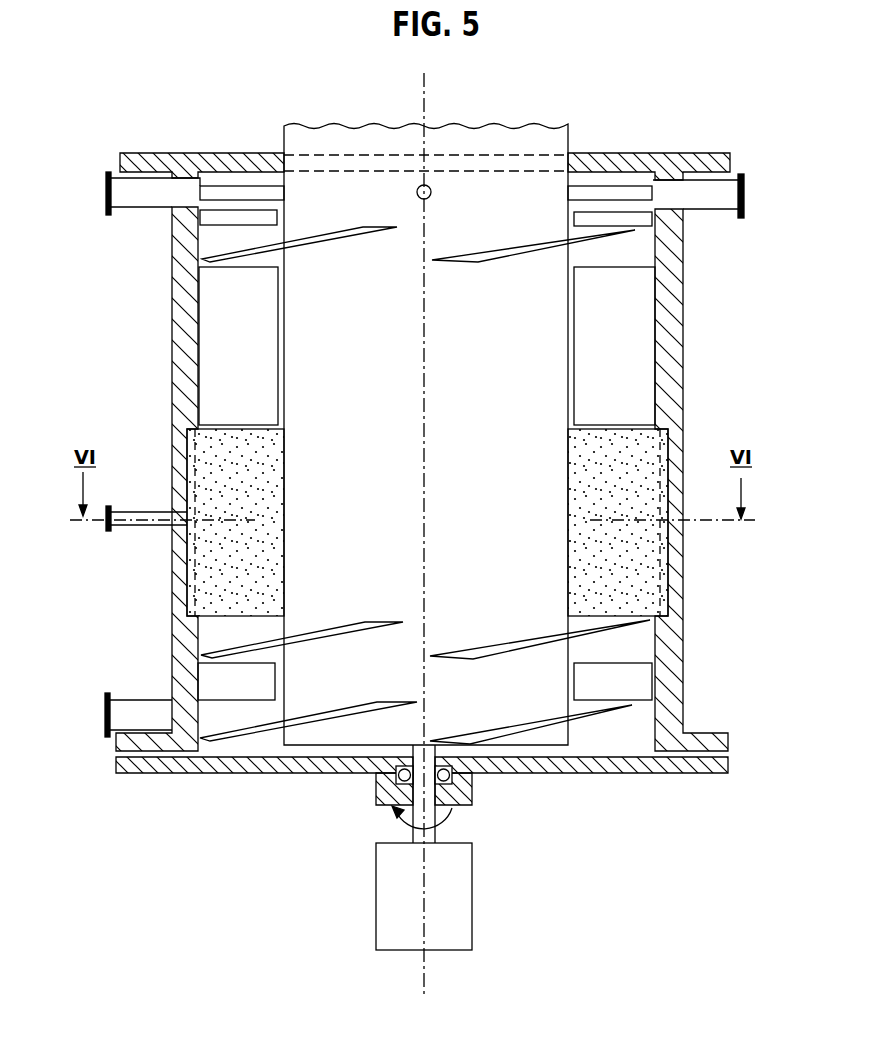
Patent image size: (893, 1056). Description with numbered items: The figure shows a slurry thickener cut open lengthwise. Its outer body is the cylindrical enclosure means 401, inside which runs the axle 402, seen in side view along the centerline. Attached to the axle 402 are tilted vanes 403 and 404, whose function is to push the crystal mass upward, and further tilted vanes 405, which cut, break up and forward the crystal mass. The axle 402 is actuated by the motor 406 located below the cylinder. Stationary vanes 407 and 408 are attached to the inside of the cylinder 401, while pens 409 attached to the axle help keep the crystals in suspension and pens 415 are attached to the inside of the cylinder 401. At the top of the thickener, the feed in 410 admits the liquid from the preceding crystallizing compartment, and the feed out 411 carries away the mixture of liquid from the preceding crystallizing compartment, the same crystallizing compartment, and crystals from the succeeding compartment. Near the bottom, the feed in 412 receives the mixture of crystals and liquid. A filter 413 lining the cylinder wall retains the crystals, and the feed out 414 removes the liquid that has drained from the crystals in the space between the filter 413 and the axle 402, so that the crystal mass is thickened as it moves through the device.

The cylindrical enclosure means 401 is at (672, 571).
The axle 402 is at (310, 311).
The tilted vanes 403 is at (535, 720).
The tilted vanes 404 is at (528, 640).
The tilted vanes 405 is at (530, 246).
The motor 406 is at (393, 891).
The stationary vanes 407 is at (222, 677).
The stationary vanes 408 is at (623, 315).
The pens 409 is at (237, 193).
The feed in 410 is at (710, 197).
The feed out 411 is at (137, 197).
The feed in 412 is at (137, 716).
The filter 413 is at (235, 585).
The feed out 414 is at (137, 510).
The pens 415 is at (610, 213).